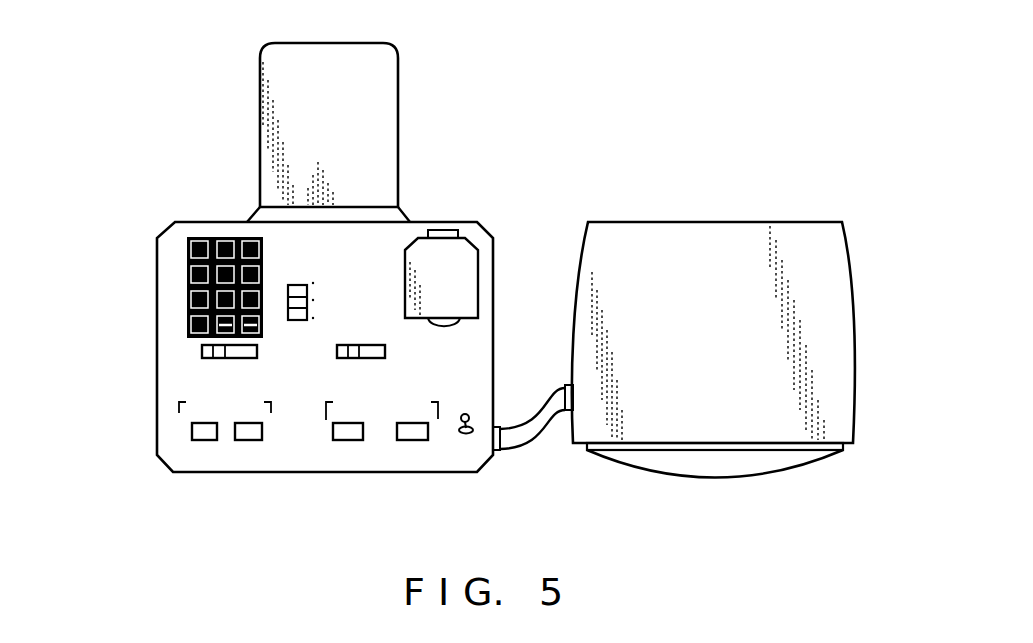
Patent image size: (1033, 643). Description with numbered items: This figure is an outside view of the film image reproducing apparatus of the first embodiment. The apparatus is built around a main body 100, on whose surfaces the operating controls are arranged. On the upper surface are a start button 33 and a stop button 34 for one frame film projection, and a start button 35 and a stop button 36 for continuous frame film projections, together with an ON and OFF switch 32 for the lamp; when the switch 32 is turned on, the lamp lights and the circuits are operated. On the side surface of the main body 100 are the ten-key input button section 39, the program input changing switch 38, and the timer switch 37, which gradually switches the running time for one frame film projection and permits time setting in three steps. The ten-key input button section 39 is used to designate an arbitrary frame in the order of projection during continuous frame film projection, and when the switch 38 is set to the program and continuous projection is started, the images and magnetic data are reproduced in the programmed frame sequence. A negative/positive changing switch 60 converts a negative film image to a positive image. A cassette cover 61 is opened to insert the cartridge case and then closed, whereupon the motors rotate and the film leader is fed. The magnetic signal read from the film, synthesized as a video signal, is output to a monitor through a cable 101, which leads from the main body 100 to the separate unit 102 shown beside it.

The ON and OFF switch 32 is at (469, 415).
The start button 33 is at (201, 440).
The stop button 34 is at (248, 440).
The start button 35 is at (342, 440).
The stop button 36 is at (410, 440).
The timer switch 37 is at (295, 284).
The program input changing switch 38 is at (203, 347).
The ten-key input button section 39 is at (202, 238).
The negative/positive changing switch 60 is at (387, 352).
The cassette cover 61 is at (405, 257).
The main body 100 is at (325, 280).
The cable 101 is at (533, 446).
The camera unit 102 is at (755, 232).